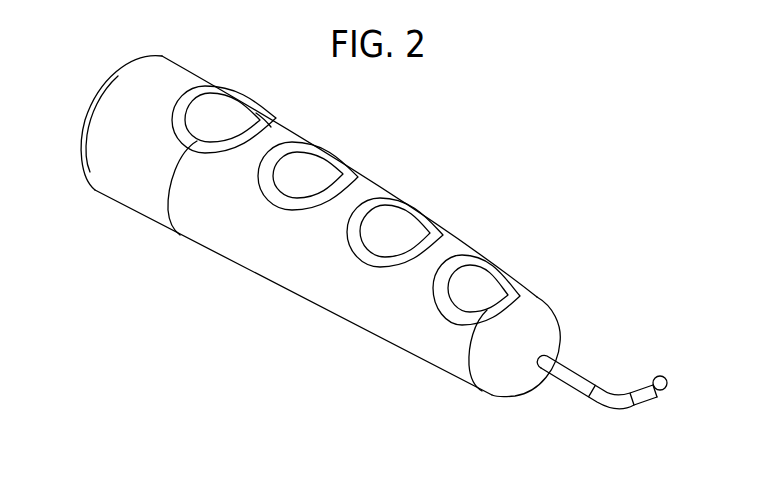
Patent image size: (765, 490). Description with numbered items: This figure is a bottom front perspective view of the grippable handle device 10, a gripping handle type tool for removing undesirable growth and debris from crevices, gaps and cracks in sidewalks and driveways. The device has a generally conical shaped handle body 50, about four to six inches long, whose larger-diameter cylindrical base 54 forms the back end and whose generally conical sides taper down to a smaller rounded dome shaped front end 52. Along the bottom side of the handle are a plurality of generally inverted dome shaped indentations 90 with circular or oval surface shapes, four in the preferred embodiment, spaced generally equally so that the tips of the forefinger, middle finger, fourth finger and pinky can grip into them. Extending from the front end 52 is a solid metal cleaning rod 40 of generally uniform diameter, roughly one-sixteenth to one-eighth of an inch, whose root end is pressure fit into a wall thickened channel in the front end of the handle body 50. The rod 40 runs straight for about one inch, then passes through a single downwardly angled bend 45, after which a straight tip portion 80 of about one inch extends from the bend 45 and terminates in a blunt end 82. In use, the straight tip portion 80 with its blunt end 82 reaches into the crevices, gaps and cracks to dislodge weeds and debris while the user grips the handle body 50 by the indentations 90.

The gripping handle type tool 10 is at (512, 134).
The solid metal cleaning rod 40 is at (577, 378).
The single downwardly angled bend 45 is at (615, 403).
The grippable handle body 50 is at (126, 181).
The rounded dome shaped front end 52 is at (542, 316).
The cylindrical base 54 is at (175, 70).
The straight tip portion 80 is at (647, 392).
The blunt end 82 is at (664, 381).
The plurality of inverted dome shaped indentations 90 is at (480, 293).